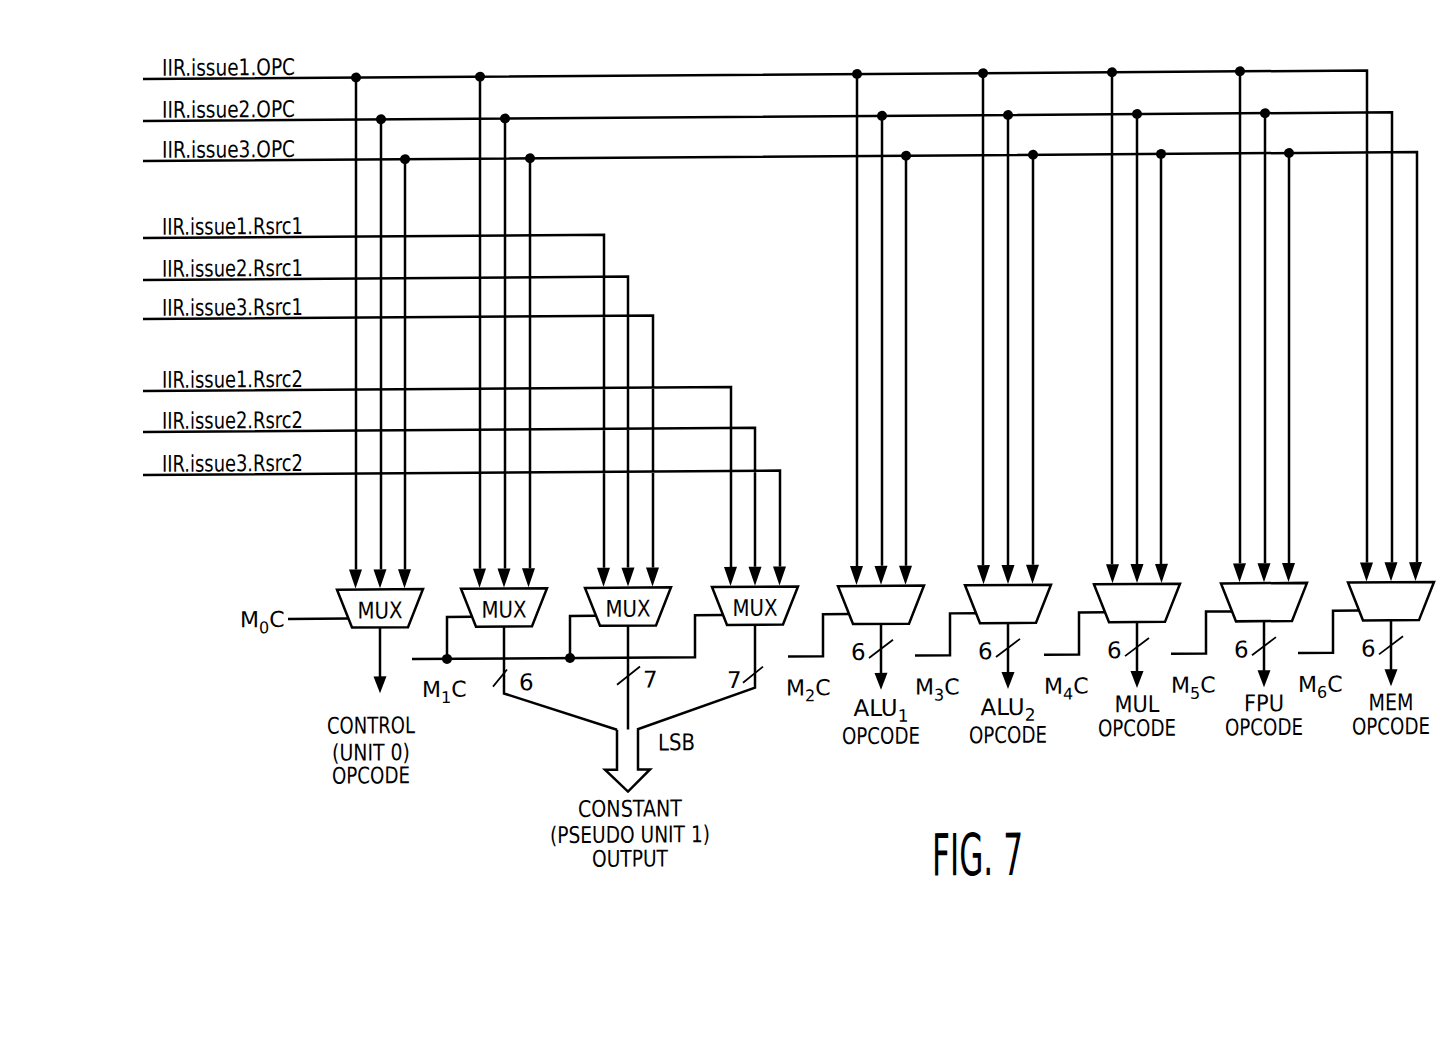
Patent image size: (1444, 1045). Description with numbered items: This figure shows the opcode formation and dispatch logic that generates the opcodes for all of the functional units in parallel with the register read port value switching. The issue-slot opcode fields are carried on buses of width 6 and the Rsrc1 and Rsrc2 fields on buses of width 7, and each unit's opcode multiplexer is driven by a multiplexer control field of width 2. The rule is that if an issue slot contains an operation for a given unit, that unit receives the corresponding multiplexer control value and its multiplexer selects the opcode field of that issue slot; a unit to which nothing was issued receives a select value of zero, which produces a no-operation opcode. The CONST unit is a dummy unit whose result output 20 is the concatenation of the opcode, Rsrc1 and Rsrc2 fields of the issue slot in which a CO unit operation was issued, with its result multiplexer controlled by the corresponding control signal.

The constant (pseudo unit 1) output 20 is at (650, 744).
The 6-bit opcode bus 6 is at (328, 152).
The 7-bit source register bus 7 is at (430, 468).
The 2-bit multiplexer control bus 2 is at (1319, 651).